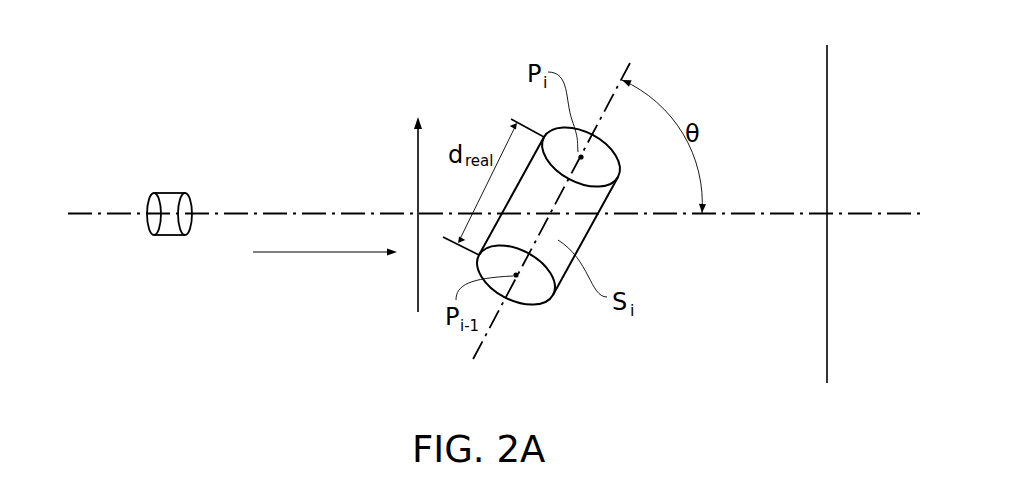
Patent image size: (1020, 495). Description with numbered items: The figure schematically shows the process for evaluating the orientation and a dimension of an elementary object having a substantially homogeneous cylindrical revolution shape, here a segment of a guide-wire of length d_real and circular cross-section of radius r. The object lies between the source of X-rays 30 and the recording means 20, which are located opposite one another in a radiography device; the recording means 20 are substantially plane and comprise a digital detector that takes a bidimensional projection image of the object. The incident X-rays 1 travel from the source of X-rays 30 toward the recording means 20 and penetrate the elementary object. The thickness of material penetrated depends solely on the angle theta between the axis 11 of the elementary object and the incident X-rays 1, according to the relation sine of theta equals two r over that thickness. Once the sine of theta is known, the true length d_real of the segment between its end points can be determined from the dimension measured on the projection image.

The source of X-rays 30 is at (170, 237).
The incident X-rays 1 is at (320, 252).
The recording means 20 is at (827, 98).
The axis 11 is at (475, 353).